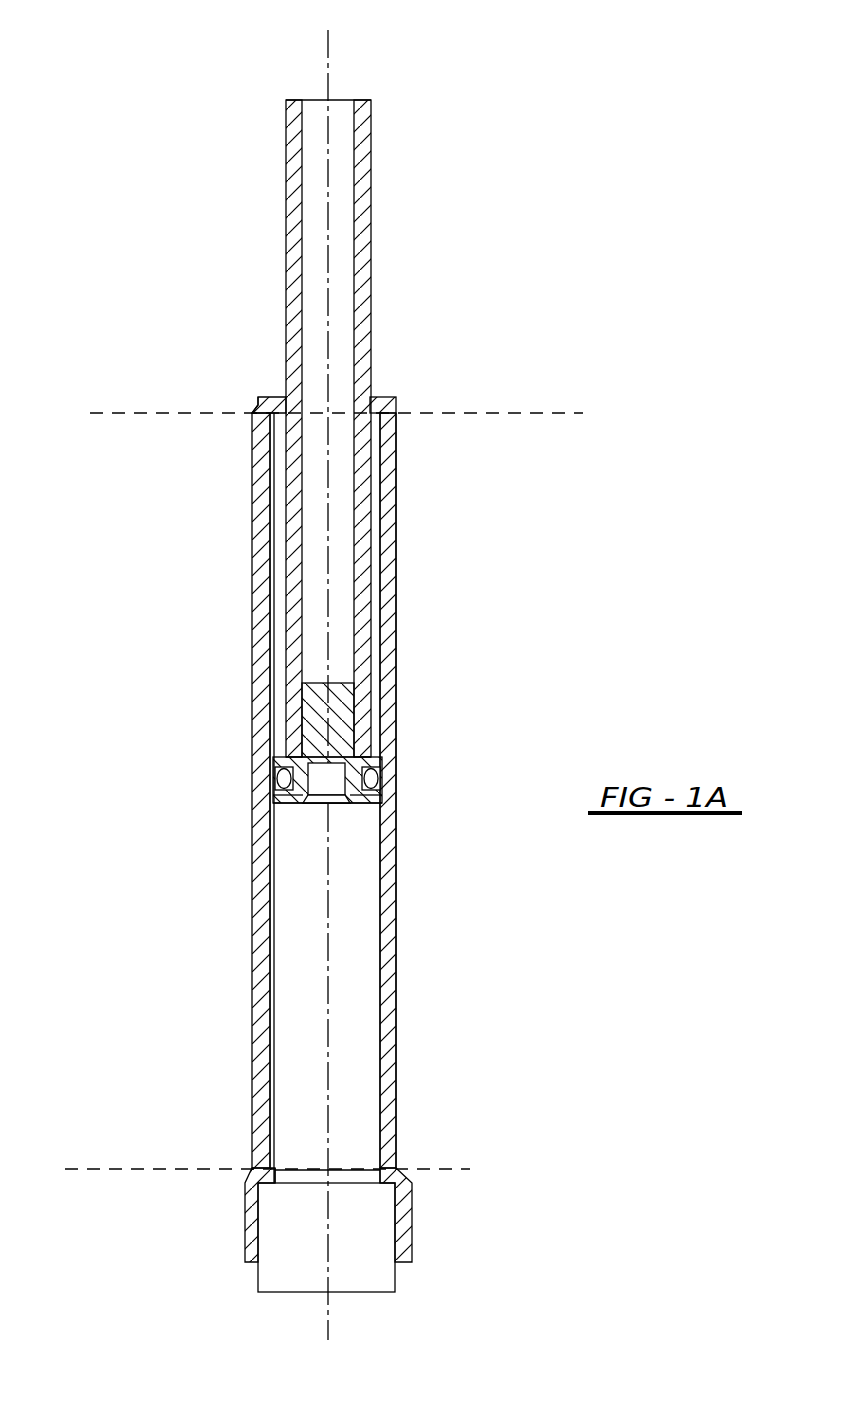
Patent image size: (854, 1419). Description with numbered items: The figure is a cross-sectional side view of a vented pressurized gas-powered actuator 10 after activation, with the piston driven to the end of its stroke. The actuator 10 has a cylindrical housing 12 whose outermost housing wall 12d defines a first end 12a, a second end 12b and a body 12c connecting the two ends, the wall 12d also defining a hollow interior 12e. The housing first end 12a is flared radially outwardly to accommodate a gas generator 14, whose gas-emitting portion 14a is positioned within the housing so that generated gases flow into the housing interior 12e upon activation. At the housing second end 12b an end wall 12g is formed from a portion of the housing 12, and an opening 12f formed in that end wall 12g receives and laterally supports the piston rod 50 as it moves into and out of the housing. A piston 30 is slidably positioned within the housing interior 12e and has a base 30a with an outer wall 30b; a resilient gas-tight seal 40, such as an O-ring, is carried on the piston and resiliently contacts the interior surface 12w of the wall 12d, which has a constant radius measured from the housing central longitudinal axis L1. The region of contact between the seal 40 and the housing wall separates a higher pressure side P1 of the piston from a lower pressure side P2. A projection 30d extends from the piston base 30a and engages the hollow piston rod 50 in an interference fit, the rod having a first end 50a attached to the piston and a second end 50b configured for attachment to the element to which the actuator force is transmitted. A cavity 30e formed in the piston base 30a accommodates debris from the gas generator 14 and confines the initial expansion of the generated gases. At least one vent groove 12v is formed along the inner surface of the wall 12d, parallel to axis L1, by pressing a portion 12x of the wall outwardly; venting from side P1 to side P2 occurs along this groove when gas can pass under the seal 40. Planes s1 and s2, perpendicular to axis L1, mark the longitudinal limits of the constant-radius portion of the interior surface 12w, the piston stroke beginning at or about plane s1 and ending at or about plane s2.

The actuator 10 is at (98, 777).
The housing 12 is at (339, 790).
The housing first end 12a is at (245, 1200).
The housing second end 12b is at (259, 402).
The housing body 12c is at (385, 540).
The housing wall 12d is at (265, 645).
The hollow interior 12e is at (362, 1005).
The opening 12f is at (284, 397).
The end wall 12g is at (388, 397).
The vent groove 12v is at (272, 912).
The interior surface 12w is at (382, 963).
The stretched portion of the wall 12x is at (252, 880).
The gas generator 14 is at (378, 1248).
The gas-emitting portion 14a is at (353, 1177).
The piston 30 is at (334, 769).
The piston base 30a is at (290, 803).
The outer wall 30b is at (284, 768).
The projection 30d is at (318, 692).
The cavity 30e is at (333, 783).
The resilient seal 40 is at (283, 780).
The piston rod 50 is at (382, 408).
The first end 50a is at (353, 703).
The second end 50b is at (307, 100).
The housing central longitudinal axis L1 is at (327, 60).
The higher pressure side P1 is at (295, 1050).
The lower pressure side P2 is at (282, 568).
The plane s1 is at (95, 1170).
The plane s2 is at (520, 413).